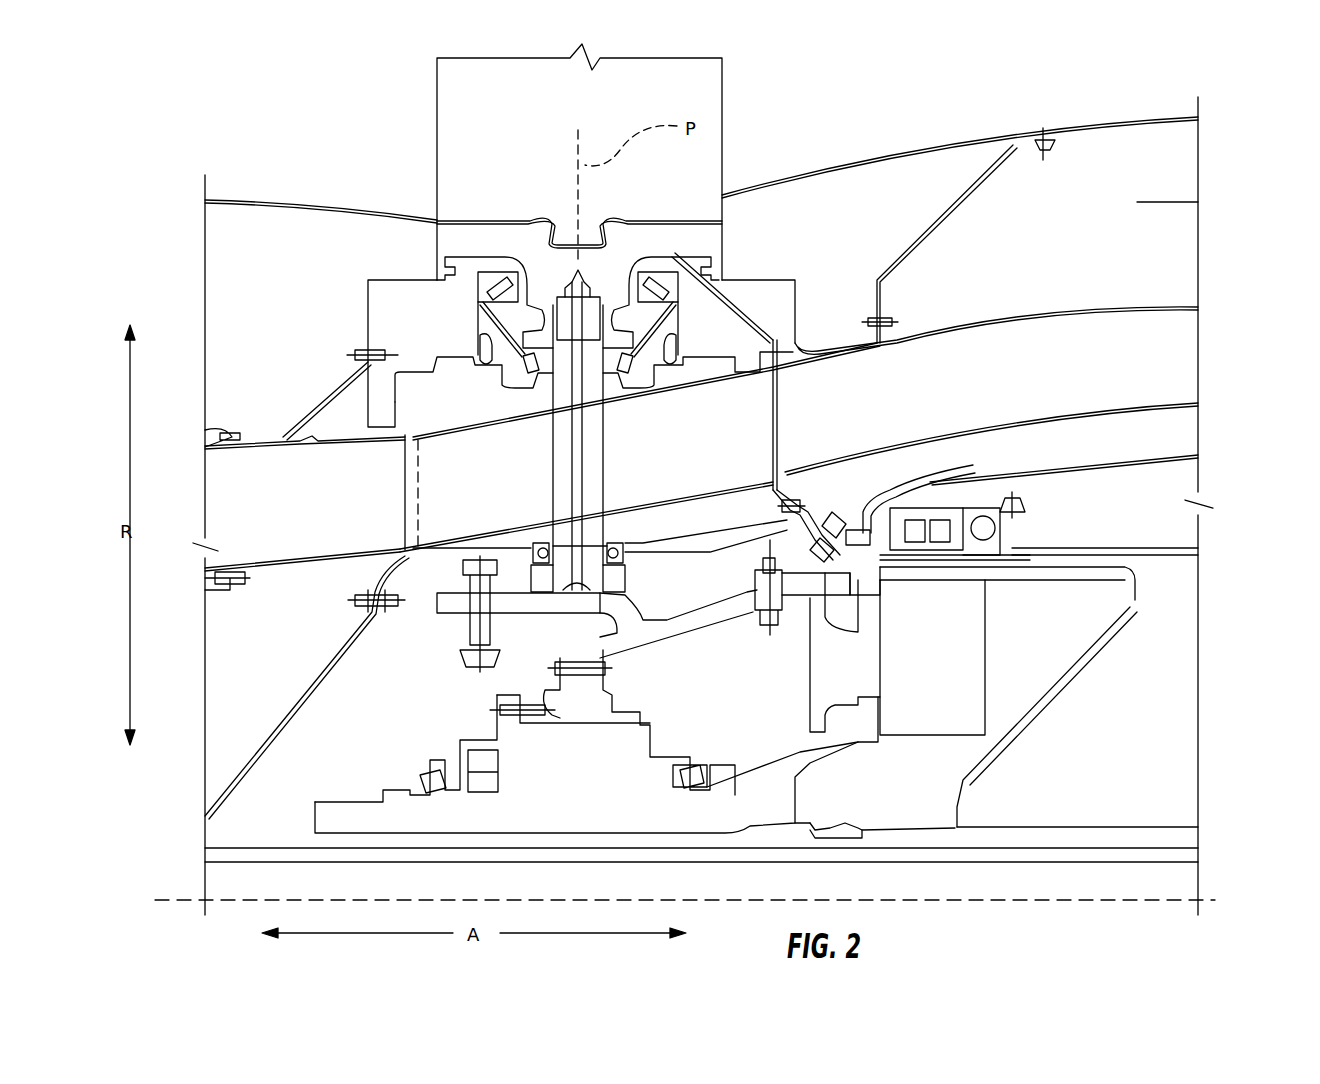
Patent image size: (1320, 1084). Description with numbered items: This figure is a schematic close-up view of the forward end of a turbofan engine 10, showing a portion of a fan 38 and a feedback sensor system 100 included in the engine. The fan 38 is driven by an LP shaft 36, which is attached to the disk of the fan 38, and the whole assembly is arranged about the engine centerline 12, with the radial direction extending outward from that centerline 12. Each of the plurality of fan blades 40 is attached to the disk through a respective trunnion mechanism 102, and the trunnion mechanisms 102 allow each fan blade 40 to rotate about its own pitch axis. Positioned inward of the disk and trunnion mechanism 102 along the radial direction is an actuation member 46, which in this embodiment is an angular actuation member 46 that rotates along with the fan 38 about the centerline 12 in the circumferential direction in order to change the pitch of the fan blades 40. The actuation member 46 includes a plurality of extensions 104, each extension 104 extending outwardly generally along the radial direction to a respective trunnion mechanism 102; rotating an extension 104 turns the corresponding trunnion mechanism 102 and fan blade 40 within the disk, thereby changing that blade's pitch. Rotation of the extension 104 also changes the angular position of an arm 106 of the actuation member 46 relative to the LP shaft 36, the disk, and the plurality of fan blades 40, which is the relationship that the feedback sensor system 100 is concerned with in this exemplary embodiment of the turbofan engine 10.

The turbofan engine 10 is at (287, 160).
The centerline 12 is at (1215, 893).
The LP shaft 36 is at (1050, 572).
The fan 38 is at (734, 130).
The fan blade 40 is at (465, 130).
The actuation member 46 is at (458, 700).
The feedback sensor system 100 is at (844, 503).
The trunnion mechanism 102 is at (639, 252).
The extension 104 is at (598, 465).
The arm 106 is at (637, 635).